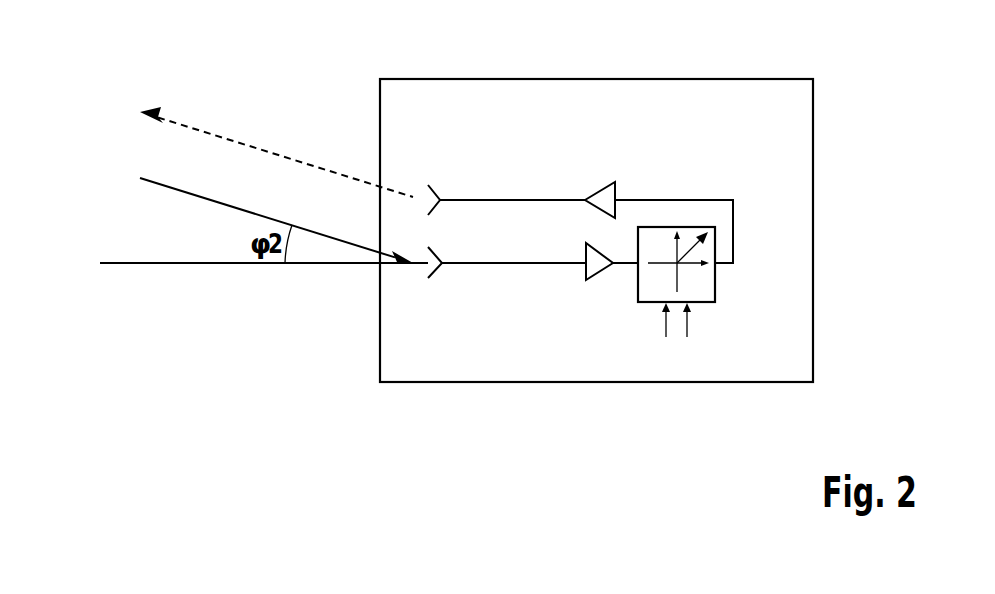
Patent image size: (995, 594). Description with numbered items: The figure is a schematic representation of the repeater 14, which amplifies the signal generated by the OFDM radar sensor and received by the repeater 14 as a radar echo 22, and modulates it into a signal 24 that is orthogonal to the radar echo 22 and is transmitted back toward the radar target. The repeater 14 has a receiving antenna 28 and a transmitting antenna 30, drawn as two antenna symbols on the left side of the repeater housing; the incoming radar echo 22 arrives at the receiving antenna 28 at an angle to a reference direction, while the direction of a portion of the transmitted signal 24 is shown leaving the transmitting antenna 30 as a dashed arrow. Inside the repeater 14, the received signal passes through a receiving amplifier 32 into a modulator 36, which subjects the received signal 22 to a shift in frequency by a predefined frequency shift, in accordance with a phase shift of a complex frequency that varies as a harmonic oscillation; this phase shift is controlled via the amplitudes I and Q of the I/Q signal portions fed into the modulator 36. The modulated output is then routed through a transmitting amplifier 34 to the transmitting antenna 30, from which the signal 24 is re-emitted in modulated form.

The repeater 14 is at (688, 78).
The radar echo 22 is at (158, 184).
The signal 24 is at (213, 135).
The receiving antenna 28 is at (443, 277).
The transmitting antenna 30 is at (437, 182).
The receiving amplifier 32 is at (597, 282).
The transmitting amplifier 34 is at (601, 182).
The modulator 36 is at (715, 290).